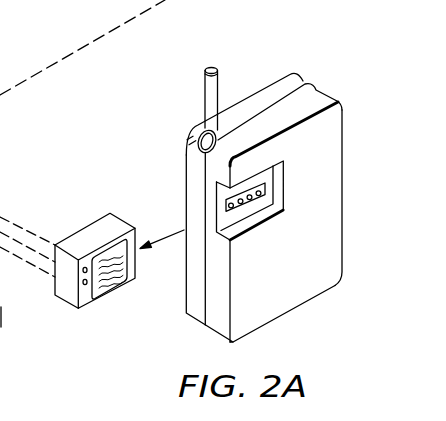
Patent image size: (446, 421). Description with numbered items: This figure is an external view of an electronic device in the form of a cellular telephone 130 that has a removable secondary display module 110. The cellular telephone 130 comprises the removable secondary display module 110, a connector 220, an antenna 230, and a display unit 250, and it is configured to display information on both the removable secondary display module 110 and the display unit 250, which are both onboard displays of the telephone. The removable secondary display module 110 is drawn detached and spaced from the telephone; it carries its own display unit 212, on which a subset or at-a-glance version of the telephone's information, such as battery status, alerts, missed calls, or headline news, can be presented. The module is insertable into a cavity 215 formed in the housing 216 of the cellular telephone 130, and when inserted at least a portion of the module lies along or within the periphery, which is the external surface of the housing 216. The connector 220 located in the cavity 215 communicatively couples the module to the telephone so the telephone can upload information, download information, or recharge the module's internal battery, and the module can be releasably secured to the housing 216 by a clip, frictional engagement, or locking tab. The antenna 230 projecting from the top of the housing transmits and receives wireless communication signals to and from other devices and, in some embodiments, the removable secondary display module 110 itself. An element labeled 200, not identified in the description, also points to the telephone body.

The removable secondary display module 110 is at (78, 222).
The cellular telephone 130 is at (197, 320).
The portable device 200 is at (177, 162).
The display unit 212 is at (97, 289).
The cavity 215 is at (272, 185).
The housing 216 is at (335, 254).
The connector 220 is at (246, 198).
The antenna 230 is at (212, 66).
The display unit 250 is at (285, 315).